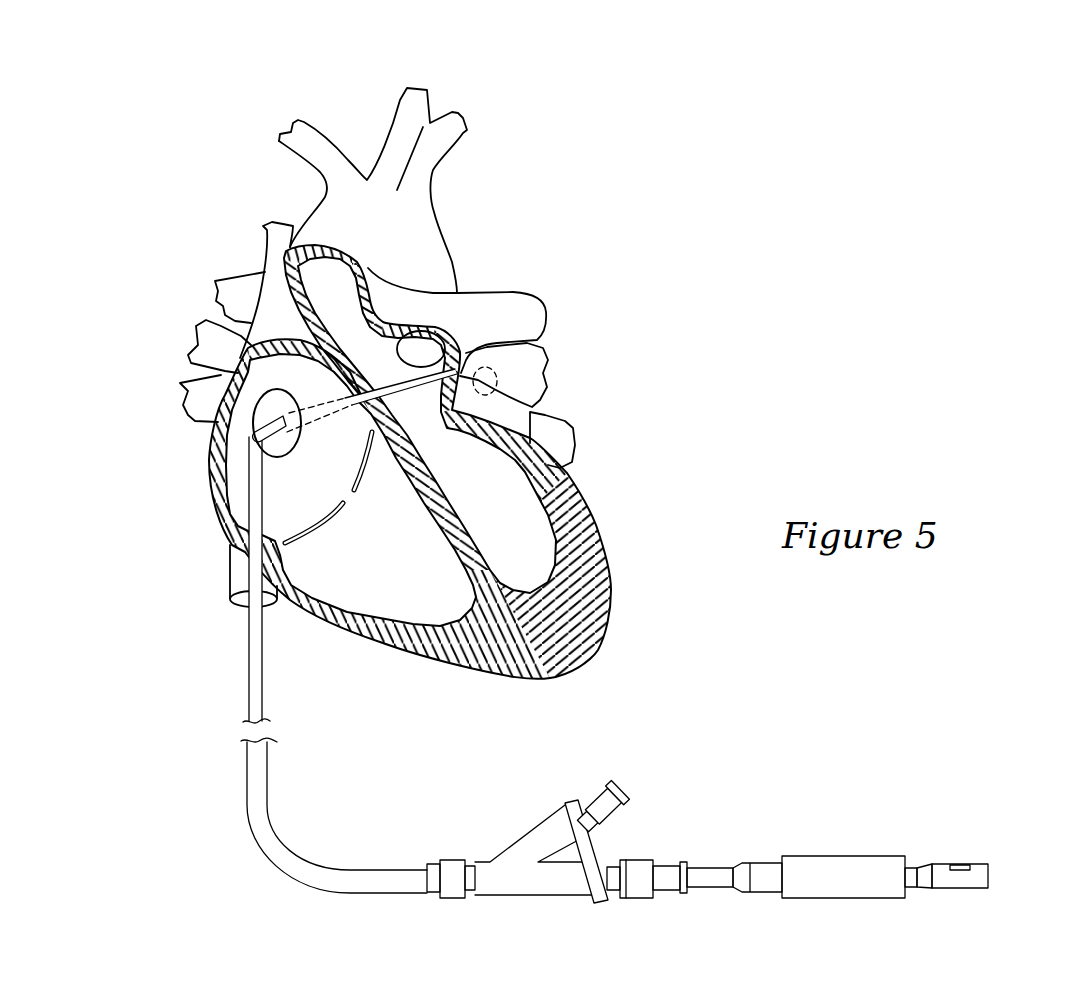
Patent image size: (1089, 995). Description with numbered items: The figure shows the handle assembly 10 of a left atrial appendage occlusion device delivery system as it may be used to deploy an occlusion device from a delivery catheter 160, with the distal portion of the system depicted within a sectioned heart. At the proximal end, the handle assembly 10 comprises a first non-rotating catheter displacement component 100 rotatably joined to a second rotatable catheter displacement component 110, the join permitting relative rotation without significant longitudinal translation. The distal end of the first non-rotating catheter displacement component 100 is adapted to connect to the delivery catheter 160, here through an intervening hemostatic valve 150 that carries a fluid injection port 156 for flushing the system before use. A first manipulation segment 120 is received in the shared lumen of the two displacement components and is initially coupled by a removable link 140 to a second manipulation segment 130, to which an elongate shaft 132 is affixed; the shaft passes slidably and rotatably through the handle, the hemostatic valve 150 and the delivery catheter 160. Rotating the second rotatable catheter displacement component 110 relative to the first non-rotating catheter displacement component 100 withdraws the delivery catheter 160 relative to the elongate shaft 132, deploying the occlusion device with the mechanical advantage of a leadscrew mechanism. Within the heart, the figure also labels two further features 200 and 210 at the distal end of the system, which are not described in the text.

The handle assembly 10 is at (848, 812).
The first non-rotating catheter displacement component 100 is at (767, 860).
The second rotatable catheter displacement component 110 is at (874, 857).
The first manipulation segment 120 is at (943, 863).
The second manipulation segment 130 is at (987, 890).
The removable link 140 is at (962, 862).
The hemostatic valve 150 is at (653, 861).
The fluid injection port 156 is at (601, 792).
The delivery catheter 160 is at (288, 416).
The inner catheter 200 is at (527, 407).
The distal tip 210 is at (480, 381).
The elongate shaft 132 is at (530, 443).